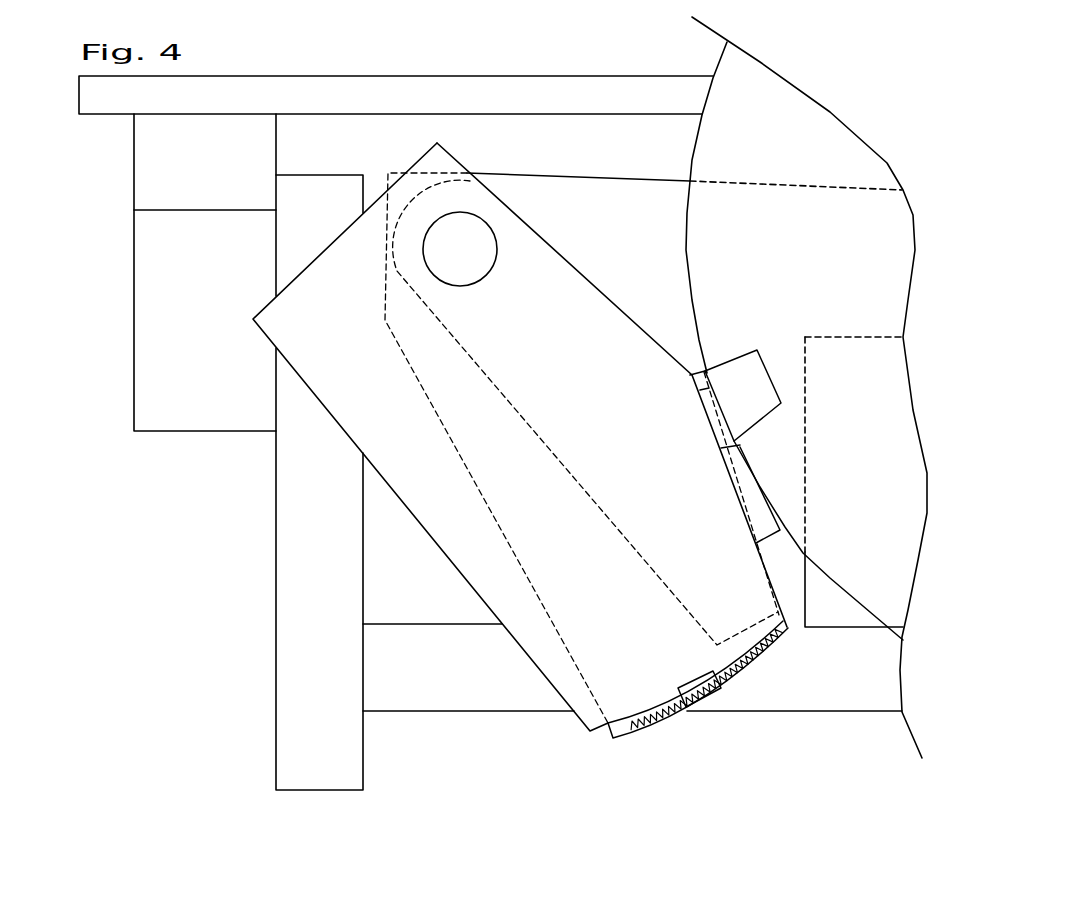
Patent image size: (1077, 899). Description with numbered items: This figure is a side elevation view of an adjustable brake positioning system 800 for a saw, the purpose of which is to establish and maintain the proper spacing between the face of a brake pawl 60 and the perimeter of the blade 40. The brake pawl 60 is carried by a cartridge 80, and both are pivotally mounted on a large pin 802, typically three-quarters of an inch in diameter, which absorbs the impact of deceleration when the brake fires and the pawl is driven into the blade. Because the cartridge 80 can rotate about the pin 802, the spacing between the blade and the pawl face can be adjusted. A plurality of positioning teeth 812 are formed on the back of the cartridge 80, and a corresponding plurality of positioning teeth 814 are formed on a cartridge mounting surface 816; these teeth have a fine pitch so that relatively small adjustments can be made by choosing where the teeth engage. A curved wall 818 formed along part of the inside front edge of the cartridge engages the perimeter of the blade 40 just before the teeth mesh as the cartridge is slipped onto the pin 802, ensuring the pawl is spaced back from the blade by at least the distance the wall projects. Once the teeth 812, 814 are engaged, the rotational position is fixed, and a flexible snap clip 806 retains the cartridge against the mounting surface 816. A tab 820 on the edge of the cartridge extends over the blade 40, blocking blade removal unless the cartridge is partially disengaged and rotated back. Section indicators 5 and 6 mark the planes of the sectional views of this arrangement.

The brake positioning system 800 is at (519, 748).
The blade 40 is at (767, 267).
The cartridge 80 is at (365, 407).
The brake pawl 60 is at (543, 447).
The pin 802 is at (480, 262).
The tab 820 is at (727, 360).
The curved wall 818 is at (740, 452).
The positioning teeth 814 is at (633, 719).
The cartridge mounting surface 816 is at (612, 738).
The positioning teeth 812 is at (773, 643).
The snap clip 806 is at (697, 672).
The section line 5 is at (675, 428).
The section line 6 is at (692, 679).